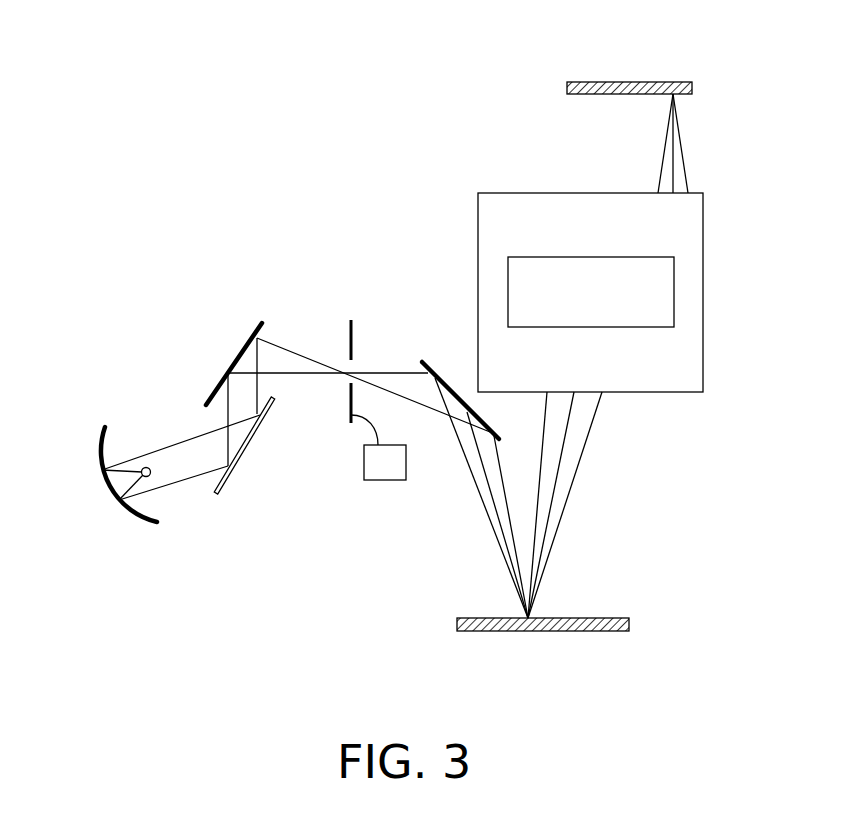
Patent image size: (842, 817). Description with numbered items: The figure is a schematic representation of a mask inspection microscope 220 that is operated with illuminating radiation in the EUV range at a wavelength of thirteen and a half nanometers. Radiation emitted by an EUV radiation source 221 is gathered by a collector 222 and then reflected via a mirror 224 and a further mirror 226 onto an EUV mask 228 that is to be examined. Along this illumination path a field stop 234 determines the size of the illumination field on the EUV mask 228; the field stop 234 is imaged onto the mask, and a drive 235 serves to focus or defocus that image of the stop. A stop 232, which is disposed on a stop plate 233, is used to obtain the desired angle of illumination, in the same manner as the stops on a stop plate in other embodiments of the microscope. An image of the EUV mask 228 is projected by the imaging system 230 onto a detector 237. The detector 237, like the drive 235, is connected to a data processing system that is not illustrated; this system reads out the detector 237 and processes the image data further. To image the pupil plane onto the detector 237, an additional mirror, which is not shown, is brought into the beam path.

The optical measurement system 220 is at (218, 155).
The EUV radiation source 221 is at (151, 477).
The collector 222 is at (95, 445).
The mirror 224 is at (241, 353).
The mirror 226 is at (422, 362).
The EUV mask 228 is at (582, 631).
The imaging system 230 is at (477, 210).
The stop 232 is at (247, 448).
The stop plate 233 is at (279, 415).
The field stop 234 is at (352, 340).
The drive 235 is at (407, 467).
The detector 237 is at (592, 82).